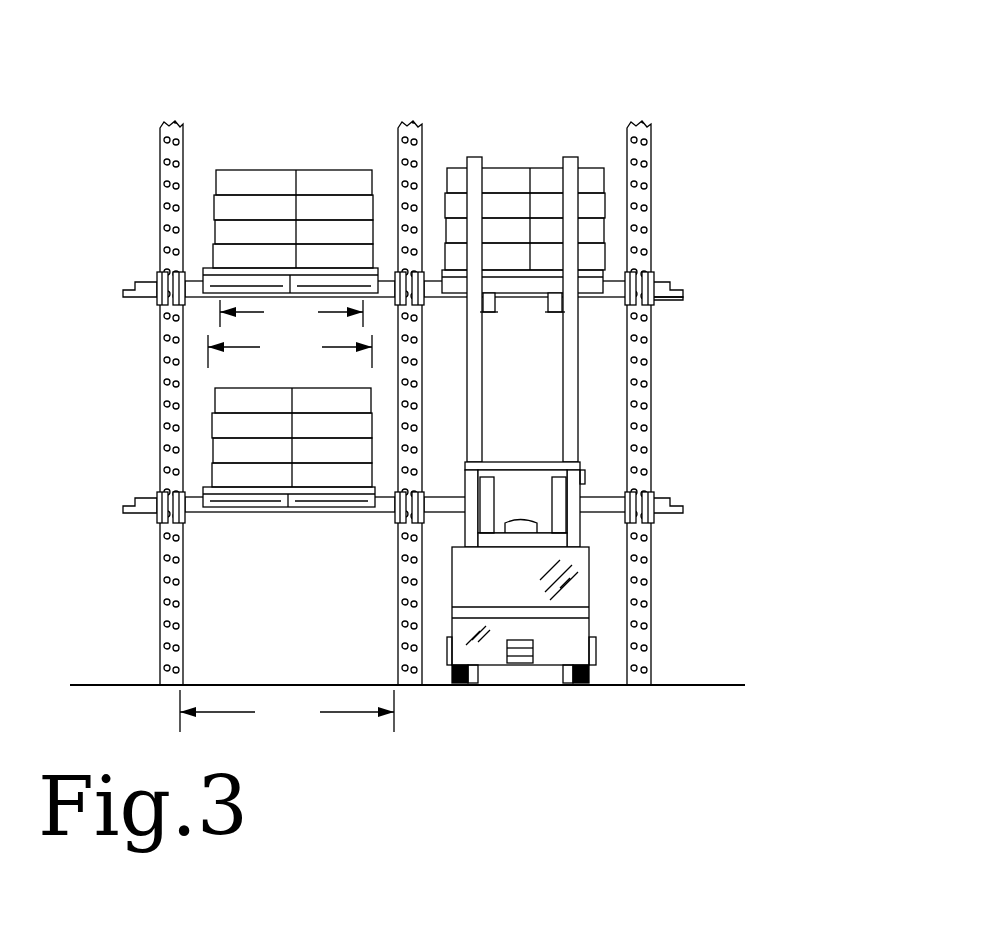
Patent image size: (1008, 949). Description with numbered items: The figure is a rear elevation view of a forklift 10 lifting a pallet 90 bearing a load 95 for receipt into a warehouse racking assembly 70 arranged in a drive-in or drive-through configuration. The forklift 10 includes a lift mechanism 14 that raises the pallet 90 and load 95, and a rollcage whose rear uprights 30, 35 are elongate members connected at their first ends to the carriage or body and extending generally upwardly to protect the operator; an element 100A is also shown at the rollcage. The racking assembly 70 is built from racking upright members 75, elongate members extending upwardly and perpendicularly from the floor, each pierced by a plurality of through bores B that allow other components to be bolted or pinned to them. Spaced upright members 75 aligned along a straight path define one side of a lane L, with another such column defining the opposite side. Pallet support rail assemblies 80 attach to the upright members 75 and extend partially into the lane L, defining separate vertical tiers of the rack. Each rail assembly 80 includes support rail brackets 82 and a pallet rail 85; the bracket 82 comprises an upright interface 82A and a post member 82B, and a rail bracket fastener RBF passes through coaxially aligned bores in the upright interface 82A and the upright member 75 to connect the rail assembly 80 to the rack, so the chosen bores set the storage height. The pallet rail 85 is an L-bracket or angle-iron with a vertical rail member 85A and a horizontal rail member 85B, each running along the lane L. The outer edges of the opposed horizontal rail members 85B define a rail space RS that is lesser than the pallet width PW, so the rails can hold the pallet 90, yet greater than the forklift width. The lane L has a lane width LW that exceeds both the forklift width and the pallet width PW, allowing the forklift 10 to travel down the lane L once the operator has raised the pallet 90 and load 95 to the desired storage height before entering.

The forklift 10 is at (554, 657).
The lift mechanism 14 is at (595, 403).
The rear upright 30 is at (458, 540).
The rear upright 35 is at (586, 477).
The racking assembly 70 is at (173, 118).
The racking upright member 75 is at (165, 148).
The pallet support rail assembly 80 is at (680, 524).
The support rail bracket 82 is at (150, 302).
The upright interface 82A is at (655, 318).
The post member 82B is at (658, 268).
The pallet rail 85 is at (194, 266).
The vertical rail member 85A is at (685, 282).
The horizontal rail member 85B is at (678, 296).
The pallet 90 is at (287, 507).
The load 95 is at (222, 458).
The sensor 100A is at (596, 534).
The through bore B is at (396, 166).
The lane L is at (232, 604).
The rail bracket fastener RBF is at (153, 520).
The rail space RS is at (291, 313).
The width dimension of pallet PW is at (290, 346).
The lane width LW is at (287, 711).